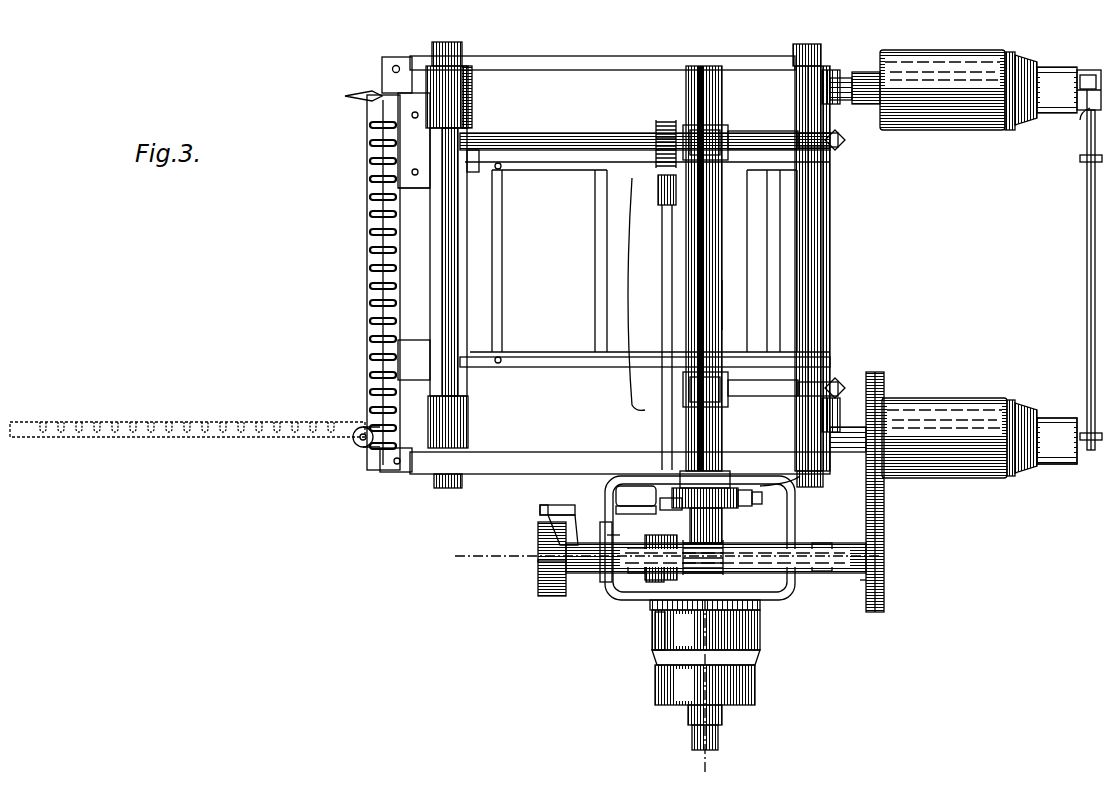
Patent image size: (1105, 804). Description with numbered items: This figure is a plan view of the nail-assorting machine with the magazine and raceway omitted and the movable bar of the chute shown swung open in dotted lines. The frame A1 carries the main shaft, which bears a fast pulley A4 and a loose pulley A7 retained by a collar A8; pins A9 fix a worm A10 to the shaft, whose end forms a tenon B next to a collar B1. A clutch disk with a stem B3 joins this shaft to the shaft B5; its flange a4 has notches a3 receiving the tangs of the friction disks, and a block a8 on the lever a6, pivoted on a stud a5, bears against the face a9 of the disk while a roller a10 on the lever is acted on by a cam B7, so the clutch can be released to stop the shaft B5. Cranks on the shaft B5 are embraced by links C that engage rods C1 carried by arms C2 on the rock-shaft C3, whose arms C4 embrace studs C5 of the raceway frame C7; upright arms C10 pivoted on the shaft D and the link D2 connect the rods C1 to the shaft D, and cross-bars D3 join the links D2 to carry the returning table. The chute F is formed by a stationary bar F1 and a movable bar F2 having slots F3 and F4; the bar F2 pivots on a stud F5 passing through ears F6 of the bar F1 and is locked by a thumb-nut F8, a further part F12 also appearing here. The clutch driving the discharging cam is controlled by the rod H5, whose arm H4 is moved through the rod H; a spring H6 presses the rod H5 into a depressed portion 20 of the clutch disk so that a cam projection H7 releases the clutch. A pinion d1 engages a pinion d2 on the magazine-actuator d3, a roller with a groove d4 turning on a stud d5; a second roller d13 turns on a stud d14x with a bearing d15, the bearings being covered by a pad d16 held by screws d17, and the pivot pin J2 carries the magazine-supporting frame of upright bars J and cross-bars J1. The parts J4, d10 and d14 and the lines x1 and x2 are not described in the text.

The chute F is at (383, 282).
The stationary bar F1 is at (383, 95).
The movable bar F2 is at (176, 440).
The slot F3 is at (391, 213).
The slot F4 is at (370, 193).
The stud F5 is at (353, 441).
The ears F6 is at (362, 452).
The thumb-nut F8 is at (360, 93).
The upper bracket F12 is at (397, 65).
The frame A1 is at (745, 60).
The fast pulley A4 is at (752, 640).
The loose pulley A7 is at (752, 685).
The collar A8 is at (722, 736).
The pins A9 is at (730, 596).
The worm A10 is at (738, 588).
The tenon B is at (683, 482).
The collar B1 is at (736, 526).
The stem B3 is at (727, 478).
The shaft B5 is at (715, 293).
The cam B7 is at (657, 588).
The links C is at (747, 140).
The rods C1 is at (826, 208).
The arms C2 is at (556, 517).
The rock-shaft C3 is at (805, 44).
The arms C4 is at (828, 70).
The studs C5 is at (578, 575).
The supporting-frame C7 is at (684, 578).
The upright arms C10 is at (464, 66).
The shaft D is at (450, 42).
The link D2 is at (575, 168).
The cross-bars D3 is at (498, 249).
The rod H is at (636, 294).
The arm H4 is at (662, 200).
The rod H5 is at (670, 256).
The spring H6 is at (654, 125).
The cam projection H7 is at (607, 535).
The upright bars J is at (1082, 160).
The cross-bars J1 is at (1088, 200).
The pin J2 is at (1078, 120).
The rod bracket J4 is at (1078, 96).
The notches a3 is at (726, 482).
The flange a4 is at (742, 482).
The pivot-stud a5 is at (623, 484).
The lever a6 is at (780, 499).
The block a8 is at (742, 505).
The face a9 is at (662, 484).
The roller a10 is at (606, 538).
The depressed portion 20 is at (645, 581).
The pinion d1 is at (878, 590).
The pinion d2 is at (877, 380).
The magazine-actuator d3 is at (943, 400).
The groove d4 is at (1012, 399).
The stud d5 is at (863, 408).
The shaft key d10 is at (545, 512).
The second magazine-supporting roller d13 is at (933, 56).
The upper drum cone d14 is at (1012, 56).
The stud d14x is at (854, 75).
The bearing d15 is at (1080, 70).
The pad d16 is at (1048, 112).
The screws d17 is at (1055, 68).
The vertical axis line x1 is at (701, 696).
The horizontal axis line x2 is at (667, 557).